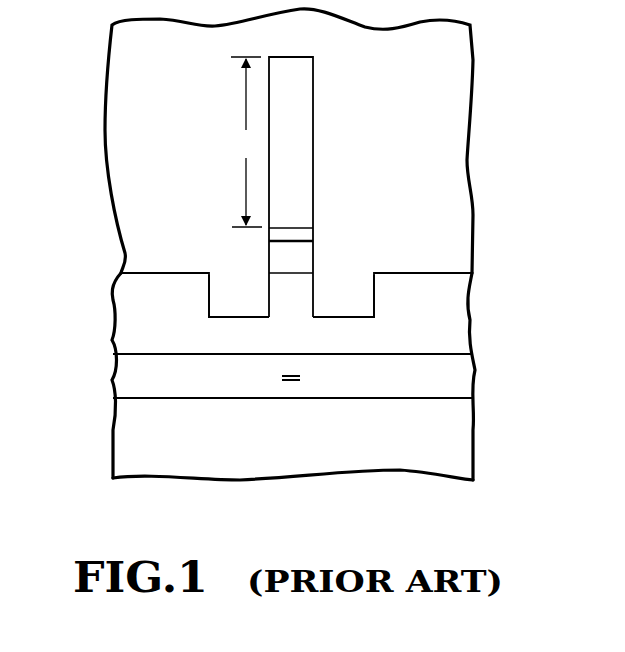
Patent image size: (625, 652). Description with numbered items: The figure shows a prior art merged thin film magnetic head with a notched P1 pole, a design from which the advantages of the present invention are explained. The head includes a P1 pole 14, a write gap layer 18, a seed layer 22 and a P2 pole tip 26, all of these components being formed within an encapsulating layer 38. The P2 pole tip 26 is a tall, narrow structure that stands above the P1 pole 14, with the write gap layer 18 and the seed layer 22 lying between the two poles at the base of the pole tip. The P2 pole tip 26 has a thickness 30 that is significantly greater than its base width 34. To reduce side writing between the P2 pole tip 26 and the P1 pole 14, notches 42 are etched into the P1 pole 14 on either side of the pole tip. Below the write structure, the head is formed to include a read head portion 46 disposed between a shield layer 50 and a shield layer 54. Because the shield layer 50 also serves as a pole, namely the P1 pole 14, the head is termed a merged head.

The P1 pole 14 is at (478, 301).
The write gap layer 18 is at (268, 258).
The seed layer 22 is at (315, 236).
The P2 pole tip 26 is at (300, 92).
The thickness 30 is at (246, 142).
The base width 34 is at (298, 225).
The encapsulating layer 38 is at (104, 130).
The notches 42 is at (233, 285).
The read head portion 46 is at (283, 372).
The shield layer 50 is at (113, 298).
The shield layer 54 is at (113, 432).